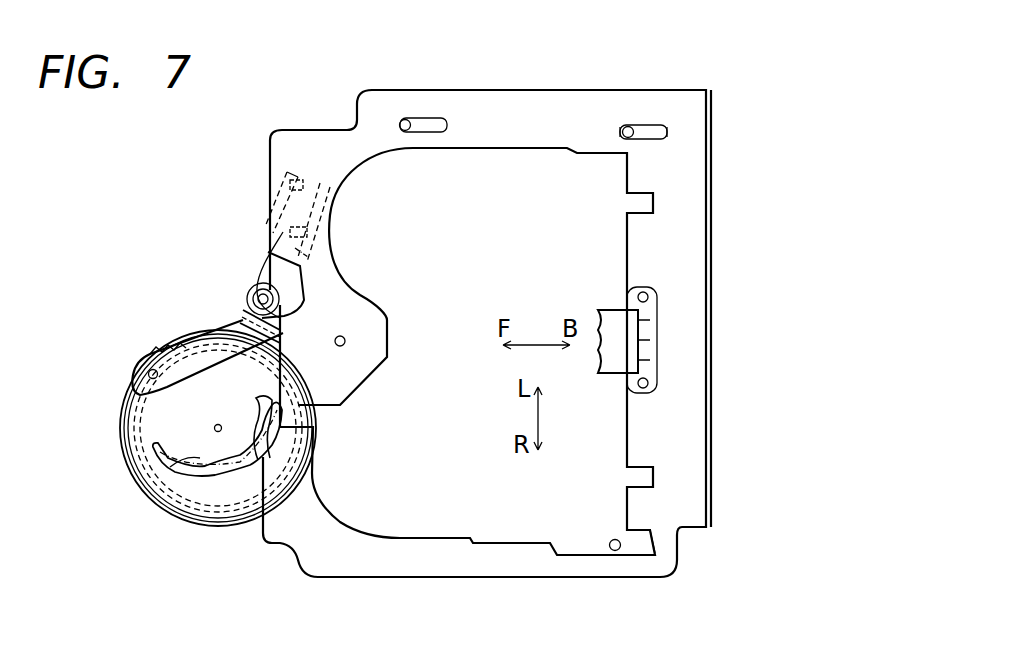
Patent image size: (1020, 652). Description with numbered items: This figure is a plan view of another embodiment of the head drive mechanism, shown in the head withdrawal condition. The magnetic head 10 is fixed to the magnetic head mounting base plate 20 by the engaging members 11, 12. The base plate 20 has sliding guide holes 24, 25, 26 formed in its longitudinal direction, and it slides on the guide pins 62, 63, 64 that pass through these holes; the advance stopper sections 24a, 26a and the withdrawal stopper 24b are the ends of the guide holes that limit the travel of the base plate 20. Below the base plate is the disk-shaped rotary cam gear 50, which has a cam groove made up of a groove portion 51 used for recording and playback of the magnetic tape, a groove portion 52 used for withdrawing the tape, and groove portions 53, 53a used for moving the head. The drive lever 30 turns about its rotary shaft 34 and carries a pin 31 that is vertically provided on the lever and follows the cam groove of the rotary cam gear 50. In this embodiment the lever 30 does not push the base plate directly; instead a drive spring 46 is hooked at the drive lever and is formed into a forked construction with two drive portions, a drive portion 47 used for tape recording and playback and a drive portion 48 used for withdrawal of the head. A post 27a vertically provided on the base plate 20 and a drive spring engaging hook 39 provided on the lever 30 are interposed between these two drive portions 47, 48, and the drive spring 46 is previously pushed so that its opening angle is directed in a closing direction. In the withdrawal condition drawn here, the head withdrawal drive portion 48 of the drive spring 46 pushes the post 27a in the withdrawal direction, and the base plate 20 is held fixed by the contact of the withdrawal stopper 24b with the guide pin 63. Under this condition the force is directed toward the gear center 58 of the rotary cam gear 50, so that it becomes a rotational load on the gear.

The magnetic head mounting base plate 20 is at (695, 113).
The sliding guide hole 25 is at (423, 117).
The guide pin 62 is at (403, 121).
The sliding guide hole 24 is at (653, 125).
The advance stopper section 24a is at (670, 127).
The withdrawal stopper 24b is at (627, 130).
The guide pin 63 is at (628, 127).
The magnetic head 10 is at (632, 317).
The engaging member 11 is at (650, 290).
The engaging member 12 is at (650, 385).
The sliding guide hole 26 is at (640, 553).
The advance stopper section 26a is at (657, 547).
The guide pin 64 is at (615, 550).
The disk-shaped rotary cam gear 50 is at (125, 450).
The gear center 58 is at (214, 428).
The groove portion 51 is at (213, 467).
The groove portion 53a is at (167, 470).
The groove portion 53 is at (253, 445).
The drive lever 30 is at (243, 305).
The rotary shaft 34 is at (250, 282).
The drive spring engaging hook 39 is at (268, 236).
The pin 31 is at (147, 355).
The groove portion 52 is at (148, 376).
The drive portion 48 is at (283, 183).
The drive portion 47 is at (318, 200).
The drive spring 46 is at (300, 255).
The post 27a is at (296, 178).